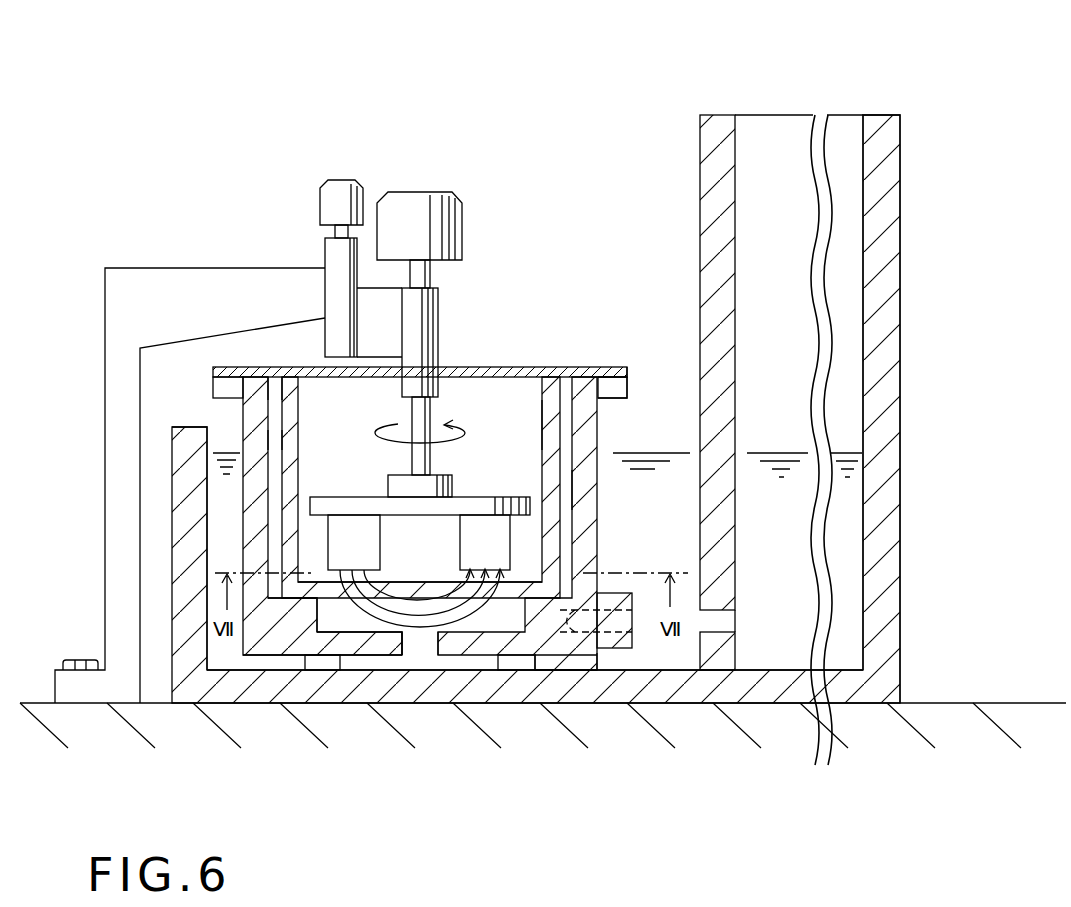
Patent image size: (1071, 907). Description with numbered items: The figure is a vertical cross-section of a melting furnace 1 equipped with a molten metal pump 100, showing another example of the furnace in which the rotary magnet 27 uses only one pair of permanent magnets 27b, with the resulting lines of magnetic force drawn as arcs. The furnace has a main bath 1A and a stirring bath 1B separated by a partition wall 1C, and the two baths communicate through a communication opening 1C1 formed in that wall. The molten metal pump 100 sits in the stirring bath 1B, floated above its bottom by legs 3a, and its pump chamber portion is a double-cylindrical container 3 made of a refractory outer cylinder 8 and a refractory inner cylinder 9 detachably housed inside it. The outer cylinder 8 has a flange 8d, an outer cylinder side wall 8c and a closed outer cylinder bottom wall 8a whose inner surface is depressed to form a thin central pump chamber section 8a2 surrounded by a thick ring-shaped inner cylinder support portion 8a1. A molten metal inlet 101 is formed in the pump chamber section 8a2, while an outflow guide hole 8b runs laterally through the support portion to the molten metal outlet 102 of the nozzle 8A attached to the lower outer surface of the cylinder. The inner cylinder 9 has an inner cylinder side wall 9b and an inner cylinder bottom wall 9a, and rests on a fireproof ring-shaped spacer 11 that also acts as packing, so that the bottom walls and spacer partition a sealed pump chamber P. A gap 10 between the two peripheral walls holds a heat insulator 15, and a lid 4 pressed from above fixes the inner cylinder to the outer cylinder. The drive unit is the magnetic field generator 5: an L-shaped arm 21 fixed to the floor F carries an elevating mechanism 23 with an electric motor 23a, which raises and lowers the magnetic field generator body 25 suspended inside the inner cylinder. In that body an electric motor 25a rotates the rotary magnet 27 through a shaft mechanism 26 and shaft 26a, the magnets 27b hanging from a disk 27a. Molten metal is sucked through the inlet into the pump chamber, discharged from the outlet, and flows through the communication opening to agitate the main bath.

The melting furnace 1 is at (524, 111).
The main bath 1A is at (887, 113).
The stirring bath 1B is at (184, 424).
The partition wall 1C is at (717, 113).
The communication opening 1C1 is at (737, 617).
The container 3 is at (225, 366).
The legs 3a is at (317, 660).
The lid 4 is at (597, 366).
The magnetic field generator 5 is at (492, 367).
The outer cylinder 8 is at (598, 523).
The outer cylinder bottom wall 8a is at (362, 657).
The inner cylinder support portion 8a1 is at (295, 622).
The pump chamber section 8a2 is at (380, 647).
The outflow guide hole 8b is at (573, 635).
The outer cylinder side wall 8c is at (585, 492).
The flange 8d is at (617, 386).
The nozzle 8A is at (610, 652).
The inner cylinder 9 is at (558, 366).
The inner cylinder bottom wall 9a is at (425, 592).
The inner cylinder side wall 9b is at (556, 426).
The gap 10 is at (275, 437).
The spacer 11 is at (262, 690).
The heat insulator 15 is at (277, 387).
The arm 21 is at (105, 530).
The elevating mechanism 23 is at (343, 180).
The electric motor 23a is at (325, 205).
The magnetic field generator body 25 is at (456, 467).
The electric motor 25a is at (420, 192).
The shaft mechanism 26 is at (438, 292).
The shaft 26a is at (415, 410).
The rotary magnet 27 is at (372, 497).
The disk 27a is at (470, 507).
The permanent magnets 27b is at (337, 545).
The molten metal pump 100 is at (566, 252).
The molten metal inlet 101 is at (430, 645).
The molten metal outlet 102 is at (648, 634).
The pump chamber P is at (520, 662).
The floor F is at (63, 762).